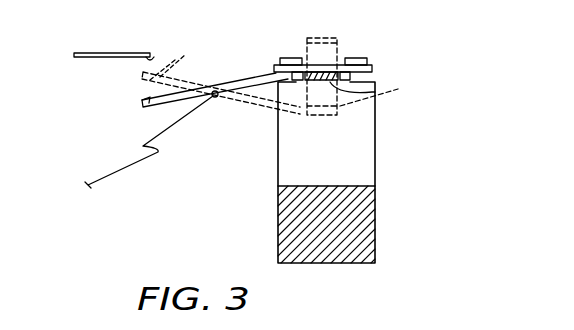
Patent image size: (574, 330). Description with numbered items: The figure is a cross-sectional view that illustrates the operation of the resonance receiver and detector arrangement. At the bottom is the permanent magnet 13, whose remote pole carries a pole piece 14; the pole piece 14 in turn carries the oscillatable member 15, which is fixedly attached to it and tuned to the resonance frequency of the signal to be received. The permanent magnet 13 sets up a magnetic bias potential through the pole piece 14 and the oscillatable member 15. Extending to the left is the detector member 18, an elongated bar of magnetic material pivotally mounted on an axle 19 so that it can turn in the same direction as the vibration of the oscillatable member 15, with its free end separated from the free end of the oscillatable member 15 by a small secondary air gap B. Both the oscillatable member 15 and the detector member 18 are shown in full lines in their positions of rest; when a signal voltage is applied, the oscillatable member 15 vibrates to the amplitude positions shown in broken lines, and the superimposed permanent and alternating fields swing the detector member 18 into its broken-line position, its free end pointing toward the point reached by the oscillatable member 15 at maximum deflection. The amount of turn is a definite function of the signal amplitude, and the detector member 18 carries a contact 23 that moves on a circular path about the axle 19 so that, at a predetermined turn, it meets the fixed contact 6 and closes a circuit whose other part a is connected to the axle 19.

The bar 6 is at (103, 53).
The contact 23 is at (148, 98).
The axle 19 is at (217, 90).
The detector member 18 is at (246, 82).
The oscillatable member 15 is at (322, 38).
The secondary air gap B is at (305, 95).
The pole piece 14 is at (365, 137).
The permanent magnet 13 is at (373, 220).
The line a is at (143, 146).